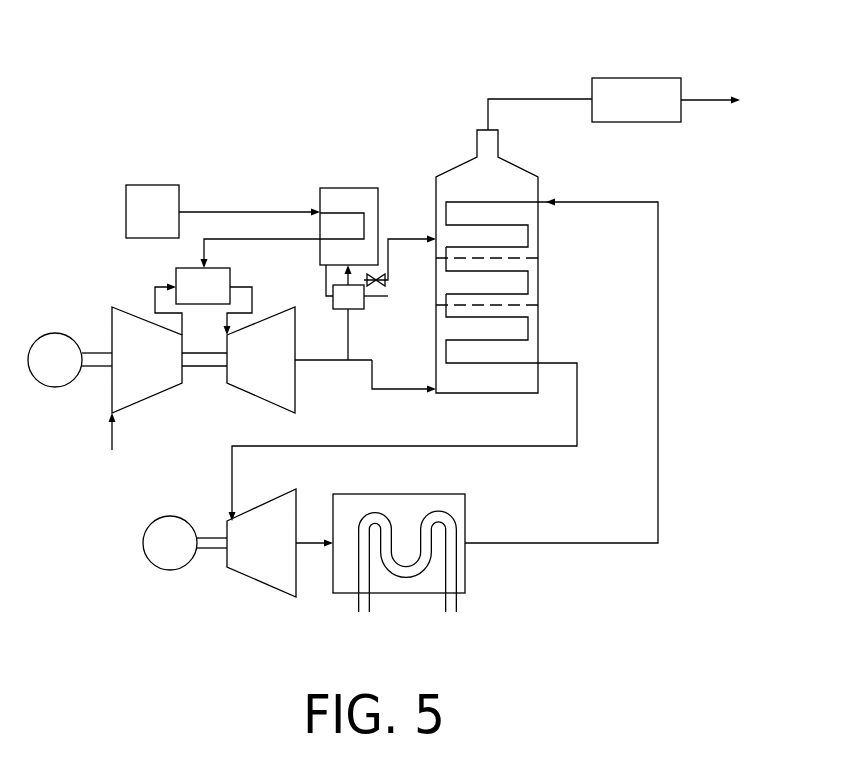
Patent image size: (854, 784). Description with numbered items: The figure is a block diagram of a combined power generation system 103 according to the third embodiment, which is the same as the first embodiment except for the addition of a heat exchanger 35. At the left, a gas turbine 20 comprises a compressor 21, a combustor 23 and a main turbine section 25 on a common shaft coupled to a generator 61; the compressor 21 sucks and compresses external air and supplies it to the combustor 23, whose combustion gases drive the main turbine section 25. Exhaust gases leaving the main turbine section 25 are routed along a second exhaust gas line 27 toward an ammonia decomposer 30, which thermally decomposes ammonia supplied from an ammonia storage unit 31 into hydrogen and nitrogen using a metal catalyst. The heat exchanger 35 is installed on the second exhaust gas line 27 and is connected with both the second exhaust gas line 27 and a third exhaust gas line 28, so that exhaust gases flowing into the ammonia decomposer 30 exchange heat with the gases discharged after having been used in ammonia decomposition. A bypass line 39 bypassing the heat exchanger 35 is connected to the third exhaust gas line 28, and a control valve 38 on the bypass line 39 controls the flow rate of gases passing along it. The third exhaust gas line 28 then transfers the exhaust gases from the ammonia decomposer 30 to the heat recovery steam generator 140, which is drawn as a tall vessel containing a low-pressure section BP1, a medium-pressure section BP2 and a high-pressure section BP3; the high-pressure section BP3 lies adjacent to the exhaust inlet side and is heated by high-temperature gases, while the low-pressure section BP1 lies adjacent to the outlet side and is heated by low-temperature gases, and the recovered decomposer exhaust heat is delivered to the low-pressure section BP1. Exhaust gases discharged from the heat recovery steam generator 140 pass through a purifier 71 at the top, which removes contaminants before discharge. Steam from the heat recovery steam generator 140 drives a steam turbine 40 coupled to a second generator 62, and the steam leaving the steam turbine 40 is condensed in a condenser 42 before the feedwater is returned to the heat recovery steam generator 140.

The combined power generation system 103 is at (280, 128).
The gas turbine 20 is at (133, 274).
The compressor 21 is at (152, 399).
The combustor 23 is at (231, 280).
The main turbine section 25 is at (262, 397).
The second exhaust gas line 27 is at (348, 338).
The third exhaust gas line 28 is at (383, 297).
The ammonia decomposer 30 is at (350, 188).
The ammonia storage unit 31 is at (157, 185).
The heat exchanger 35 is at (358, 310).
The control valve 38 is at (384, 275).
The bypass line 39 is at (326, 280).
The steam turbine 40 is at (258, 583).
The condenser 42 is at (398, 595).
The generator 61 is at (55, 387).
The generator 62 is at (143, 545).
The purifier 71 is at (658, 78).
The heat recovery steam generator 140 is at (540, 246).
The low-pressure section BP1 is at (538, 232).
The medium-pressure section BP2 is at (538, 280).
The high-pressure section BP3 is at (538, 330).